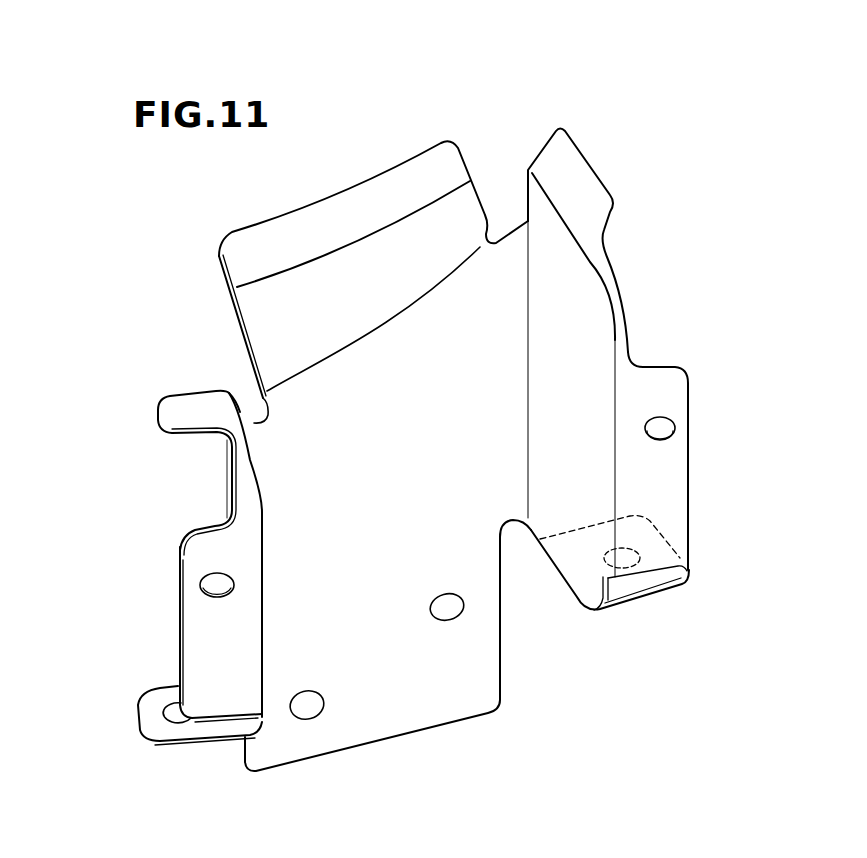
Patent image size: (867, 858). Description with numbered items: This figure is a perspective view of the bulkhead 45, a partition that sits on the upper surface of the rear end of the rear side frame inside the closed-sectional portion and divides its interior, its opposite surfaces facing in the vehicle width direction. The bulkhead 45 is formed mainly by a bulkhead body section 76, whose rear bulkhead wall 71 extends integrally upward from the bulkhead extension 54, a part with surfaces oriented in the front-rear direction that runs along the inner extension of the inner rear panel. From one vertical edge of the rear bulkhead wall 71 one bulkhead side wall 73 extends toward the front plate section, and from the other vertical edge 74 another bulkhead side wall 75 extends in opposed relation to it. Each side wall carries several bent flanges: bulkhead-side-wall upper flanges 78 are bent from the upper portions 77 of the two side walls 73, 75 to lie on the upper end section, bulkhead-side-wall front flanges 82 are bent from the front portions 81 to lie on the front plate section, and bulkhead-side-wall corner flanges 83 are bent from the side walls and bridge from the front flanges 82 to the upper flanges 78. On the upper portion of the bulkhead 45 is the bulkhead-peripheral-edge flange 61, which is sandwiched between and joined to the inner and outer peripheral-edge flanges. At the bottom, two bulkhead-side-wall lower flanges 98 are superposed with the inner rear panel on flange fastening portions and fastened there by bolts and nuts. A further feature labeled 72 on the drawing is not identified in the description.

The bulkhead 45 is at (183, 292).
The bulkhead extension 54 is at (503, 592).
The bulkhead-peripheral-edge flange 61 is at (469, 150).
The rear bulkhead wall 71 is at (365, 468).
The bent portion 72 is at (517, 340).
The bulkhead side wall 73 is at (587, 347).
The vertical edge 74 is at (261, 400).
The bulkhead side wall 75 is at (237, 492).
The bulkhead body section 76 is at (216, 456).
The upper portion 77 is at (588, 261).
The bulkhead-side-wall upper flange 78 is at (177, 394).
The front portion 81 is at (616, 422).
The bulkhead-side-wall front flange 82 is at (177, 642).
The bulkhead-side-wall corner flange 83 is at (250, 472).
The bulkhead-side-wall lower flange 98 is at (140, 722).